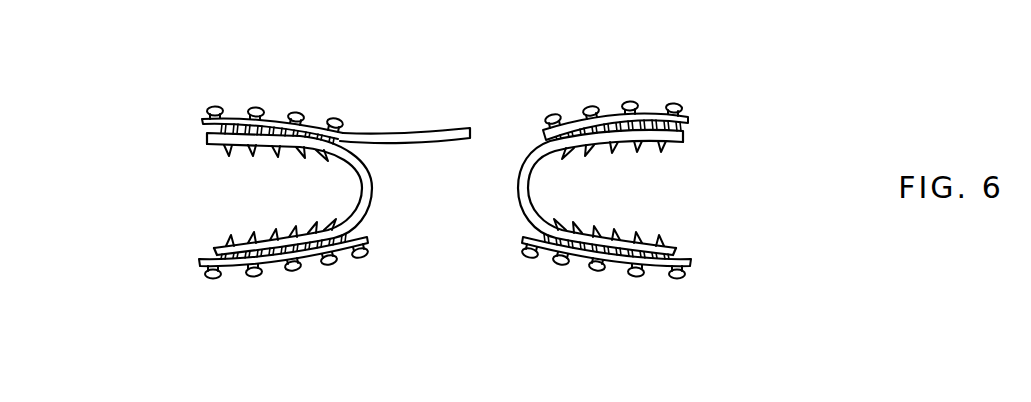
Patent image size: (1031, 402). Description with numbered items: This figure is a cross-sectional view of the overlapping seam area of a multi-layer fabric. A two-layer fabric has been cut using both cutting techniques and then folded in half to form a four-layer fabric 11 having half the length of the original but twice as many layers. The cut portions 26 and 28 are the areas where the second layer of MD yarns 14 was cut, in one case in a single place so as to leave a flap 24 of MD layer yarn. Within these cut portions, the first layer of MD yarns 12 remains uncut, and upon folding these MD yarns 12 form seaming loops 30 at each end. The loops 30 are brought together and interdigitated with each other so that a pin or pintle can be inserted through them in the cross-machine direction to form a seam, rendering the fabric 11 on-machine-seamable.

The four-layer fabric 11 is at (663, 292).
The first layer of MD yarns 12 is at (197, 261).
The second layer of MD yarns 14 is at (251, 104).
The flap 24 is at (410, 129).
The cut portion 26 is at (508, 143).
The cut portion 28 is at (376, 150).
The loops 30 is at (354, 182).